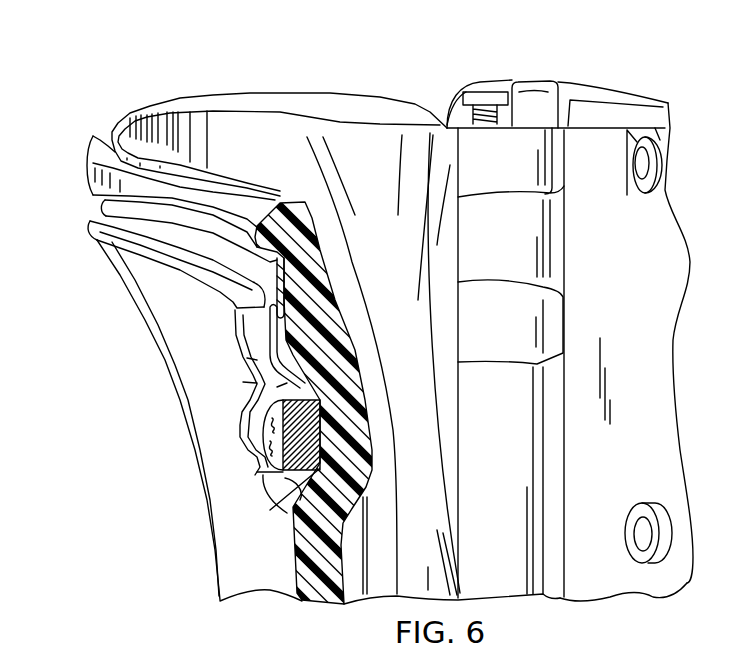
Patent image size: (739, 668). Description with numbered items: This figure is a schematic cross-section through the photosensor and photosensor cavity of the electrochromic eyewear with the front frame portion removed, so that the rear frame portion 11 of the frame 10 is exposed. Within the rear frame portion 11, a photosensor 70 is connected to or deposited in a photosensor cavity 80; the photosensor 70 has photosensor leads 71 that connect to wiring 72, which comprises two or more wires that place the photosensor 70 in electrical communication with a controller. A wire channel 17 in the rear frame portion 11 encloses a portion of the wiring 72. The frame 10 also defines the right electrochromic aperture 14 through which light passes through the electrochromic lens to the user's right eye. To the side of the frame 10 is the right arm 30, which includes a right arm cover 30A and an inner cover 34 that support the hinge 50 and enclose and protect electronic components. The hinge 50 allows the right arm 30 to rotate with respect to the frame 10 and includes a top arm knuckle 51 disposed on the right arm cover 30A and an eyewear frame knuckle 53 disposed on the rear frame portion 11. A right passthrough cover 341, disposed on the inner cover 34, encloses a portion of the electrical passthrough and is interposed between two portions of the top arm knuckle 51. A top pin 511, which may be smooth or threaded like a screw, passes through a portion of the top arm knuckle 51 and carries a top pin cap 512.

The frame 10 is at (265, 93).
The rear frame portion 11 is at (97, 142).
The wiring 72 is at (112, 205).
The wire channel 17 is at (100, 236).
The right electrochromic aperture 14 is at (157, 323).
The photosensor leads 71 is at (245, 335).
The photosensor cavity 80 is at (305, 468).
The photosensor 70 is at (290, 497).
The top pin 511 is at (442, 126).
The top pin cap 512 is at (483, 92).
The hinge 50 is at (537, 84).
The right arm cover 30A is at (591, 85).
The right arm 30 is at (652, 97).
The top arm knuckle 51 is at (494, 169).
The right passthrough cover 341 is at (486, 249).
The inner cover 34 is at (612, 292).
The eyewear frame knuckle 53 is at (471, 447).